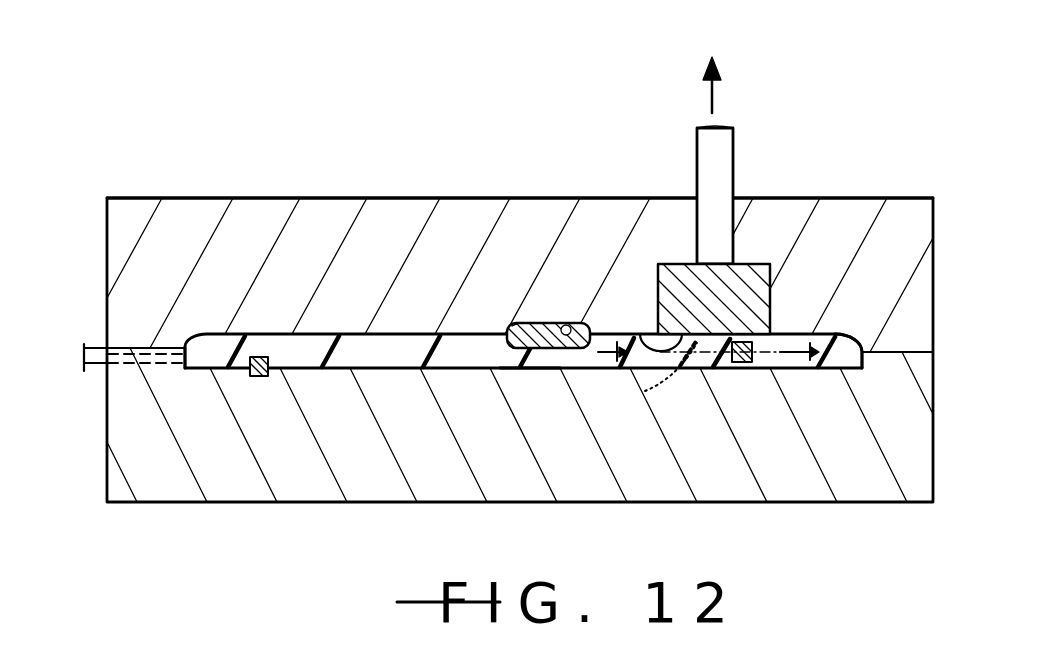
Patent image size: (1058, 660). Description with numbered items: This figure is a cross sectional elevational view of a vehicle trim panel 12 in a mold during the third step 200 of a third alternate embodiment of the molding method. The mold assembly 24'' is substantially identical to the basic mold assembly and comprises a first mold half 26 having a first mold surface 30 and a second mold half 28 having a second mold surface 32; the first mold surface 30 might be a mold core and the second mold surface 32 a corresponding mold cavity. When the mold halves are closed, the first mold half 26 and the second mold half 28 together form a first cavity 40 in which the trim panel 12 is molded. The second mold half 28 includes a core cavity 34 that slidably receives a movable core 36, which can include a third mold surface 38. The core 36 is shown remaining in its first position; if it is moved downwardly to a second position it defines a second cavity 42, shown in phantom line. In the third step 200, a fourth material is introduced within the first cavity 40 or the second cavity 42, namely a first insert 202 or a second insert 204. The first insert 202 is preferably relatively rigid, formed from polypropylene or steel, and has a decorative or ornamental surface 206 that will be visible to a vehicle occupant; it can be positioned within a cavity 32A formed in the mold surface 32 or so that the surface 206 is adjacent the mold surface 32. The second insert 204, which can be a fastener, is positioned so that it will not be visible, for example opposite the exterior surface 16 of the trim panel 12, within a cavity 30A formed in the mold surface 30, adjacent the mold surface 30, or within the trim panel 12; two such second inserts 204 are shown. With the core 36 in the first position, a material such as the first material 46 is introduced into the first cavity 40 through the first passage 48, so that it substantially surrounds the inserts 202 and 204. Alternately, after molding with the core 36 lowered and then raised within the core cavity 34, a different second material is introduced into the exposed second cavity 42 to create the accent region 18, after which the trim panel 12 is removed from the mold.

The third step of the third alternate embodiment of the method 200 is at (155, 100).
The second mold half 28 is at (158, 218).
The first mold half 26 is at (223, 483).
The trim panel 12 is at (198, 342).
The exterior surface 16 is at (226, 334).
The mold assembly 24'' is at (520, 161).
The second mold surface 32 is at (297, 337).
The first mold surface 30 is at (443, 362).
The cavity formed in the first mold surface 30A is at (230, 362).
The first passage 48 is at (98, 368).
The first cavity 40 is at (533, 368).
The movable core 36 is at (758, 263).
The core cavity 34 is at (770, 316).
The third mold surface 38 is at (645, 342).
The first insert 202 is at (545, 323).
The decorative or ornamental surface 206 is at (523, 323).
The cavity formed in the second mold surface 32A is at (565, 327).
The second insert 204 is at (267, 377).
The second cavity 42 is at (706, 368).
The accent region 18 is at (645, 391).
The first material 46 is at (846, 362).